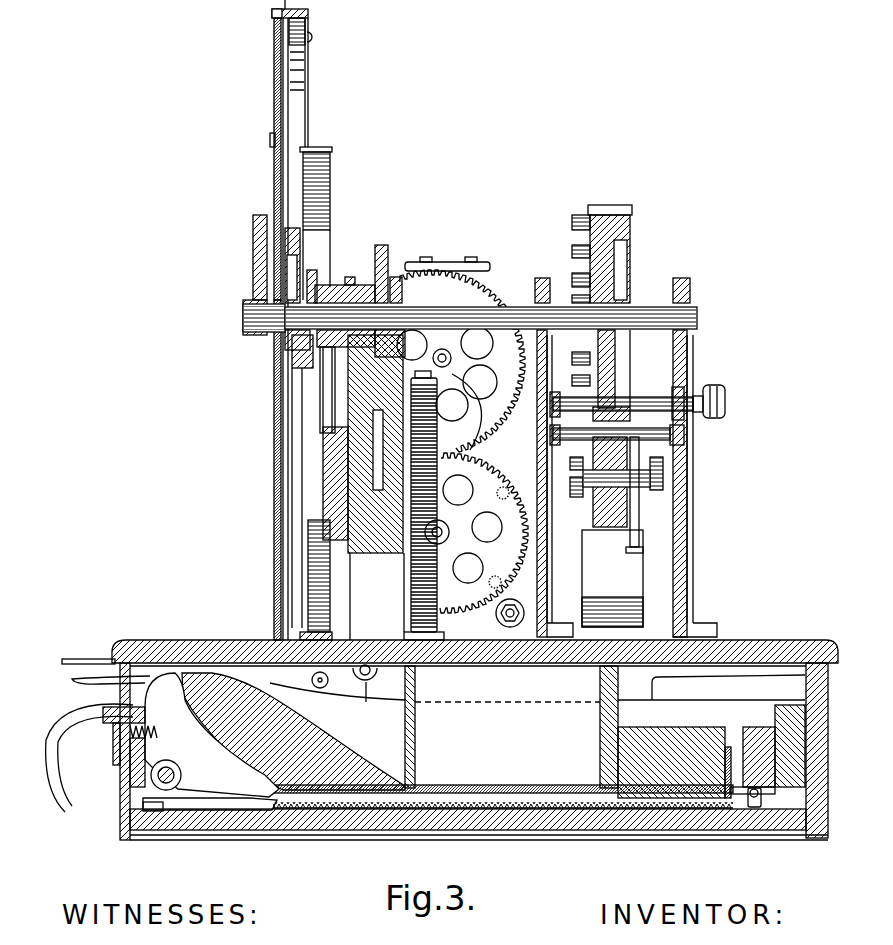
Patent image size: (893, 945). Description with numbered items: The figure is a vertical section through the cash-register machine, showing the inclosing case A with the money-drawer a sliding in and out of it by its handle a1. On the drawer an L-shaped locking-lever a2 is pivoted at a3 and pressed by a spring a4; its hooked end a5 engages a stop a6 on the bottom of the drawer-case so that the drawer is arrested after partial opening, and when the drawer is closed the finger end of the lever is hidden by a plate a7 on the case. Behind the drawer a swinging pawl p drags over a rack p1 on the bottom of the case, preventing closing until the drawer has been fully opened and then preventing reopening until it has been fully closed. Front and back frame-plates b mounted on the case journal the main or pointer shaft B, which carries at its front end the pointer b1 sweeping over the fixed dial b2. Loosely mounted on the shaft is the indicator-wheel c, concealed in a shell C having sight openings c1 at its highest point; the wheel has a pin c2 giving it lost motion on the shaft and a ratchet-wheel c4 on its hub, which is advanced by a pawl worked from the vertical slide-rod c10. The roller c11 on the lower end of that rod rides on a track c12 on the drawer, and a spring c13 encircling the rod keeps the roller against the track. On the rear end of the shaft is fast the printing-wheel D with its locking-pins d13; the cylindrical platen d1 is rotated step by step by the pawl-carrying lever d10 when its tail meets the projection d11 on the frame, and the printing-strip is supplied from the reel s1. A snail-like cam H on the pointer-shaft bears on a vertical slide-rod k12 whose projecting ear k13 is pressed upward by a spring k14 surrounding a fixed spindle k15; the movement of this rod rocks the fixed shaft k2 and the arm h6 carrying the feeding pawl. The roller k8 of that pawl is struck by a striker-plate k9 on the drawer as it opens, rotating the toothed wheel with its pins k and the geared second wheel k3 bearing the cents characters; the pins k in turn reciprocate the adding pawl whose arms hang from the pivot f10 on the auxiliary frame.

The inclosing case A is at (184, 640).
The money-drawer a is at (121, 788).
The handle a1 is at (59, 780).
The L-shaped locking-lever a2 is at (78, 683).
The pivot a3 is at (181, 775).
The spring a4 is at (120, 745).
The hooked end a5 is at (270, 808).
The stop a6 is at (150, 811).
The plate a7 is at (85, 659).
The main or pointer shaft B is at (640, 306).
The frame-plates b is at (370, 556).
The pointer b1 is at (253, 262).
The fixed dial b2 is at (274, 440).
The inclosing case or shell C is at (272, 14).
The indicator-wheel c is at (290, 146).
The sight openings c1 is at (275, 72).
The pin c2 is at (306, 82).
The ratchet-wheel c4 is at (313, 272).
The vertical slide-rod c10 is at (318, 380).
The roller c11 is at (318, 688).
The track c12 is at (345, 700).
The spring c13 is at (331, 586).
The printing-wheel D is at (631, 214).
The platen d1 is at (608, 526).
The pawl-carrying lever d10 is at (627, 543).
The projection d11 is at (632, 553).
The locking-pins d13 is at (572, 226).
The pivot f10 is at (442, 349).
The snail-like cam H is at (389, 260).
The arm h6 is at (413, 560).
The pins k is at (506, 487).
The fixed shaft k2 is at (442, 537).
The second wheel k3 is at (488, 290).
The roller k8 is at (366, 682).
The striker-plate k9 is at (711, 689).
The vertical slide-rod k12 is at (462, 458).
The projecting ear k13 is at (455, 373).
The spring k14 is at (446, 521).
The fixed spindle k15 is at (496, 612).
The swinging pawl p is at (752, 807).
The rack p1 is at (580, 812).
The reel s1 is at (623, 578).